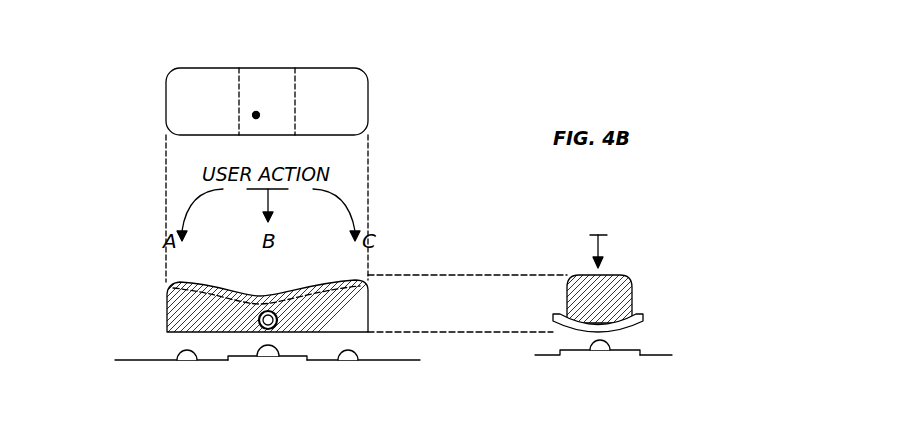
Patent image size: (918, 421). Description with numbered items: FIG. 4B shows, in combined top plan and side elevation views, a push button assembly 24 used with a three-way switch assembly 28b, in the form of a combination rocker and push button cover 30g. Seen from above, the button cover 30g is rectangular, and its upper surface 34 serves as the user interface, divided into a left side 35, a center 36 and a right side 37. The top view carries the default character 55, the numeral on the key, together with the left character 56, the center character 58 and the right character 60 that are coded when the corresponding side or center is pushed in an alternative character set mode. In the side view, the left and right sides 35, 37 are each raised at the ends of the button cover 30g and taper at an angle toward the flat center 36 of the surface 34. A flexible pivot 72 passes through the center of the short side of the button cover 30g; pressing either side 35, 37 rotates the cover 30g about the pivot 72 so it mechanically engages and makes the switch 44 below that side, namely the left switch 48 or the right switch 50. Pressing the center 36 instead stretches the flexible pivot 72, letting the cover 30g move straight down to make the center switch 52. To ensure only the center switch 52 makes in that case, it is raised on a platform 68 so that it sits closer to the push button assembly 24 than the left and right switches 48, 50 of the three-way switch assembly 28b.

The push button assembly 24 is at (458, 118).
The button cover 30g is at (165, 99).
The upper surface 34 is at (237, 137).
The left side 35 is at (183, 188).
The center 36 is at (254, 165).
The right side 37 is at (350, 127).
The default characters 55 is at (193, 83).
The left character 56 is at (311, 78).
The center character 58 is at (340, 73).
The right character 60 is at (366, 78).
The flexible pivot 72 is at (426, 297).
The switches 44 is at (173, 368).
The left switch 48 is at (171, 348).
The right switch 50 is at (380, 345).
The center switch 52 is at (476, 345).
The platform 68 is at (418, 353).
The three-way switch assembly 28b is at (417, 378).